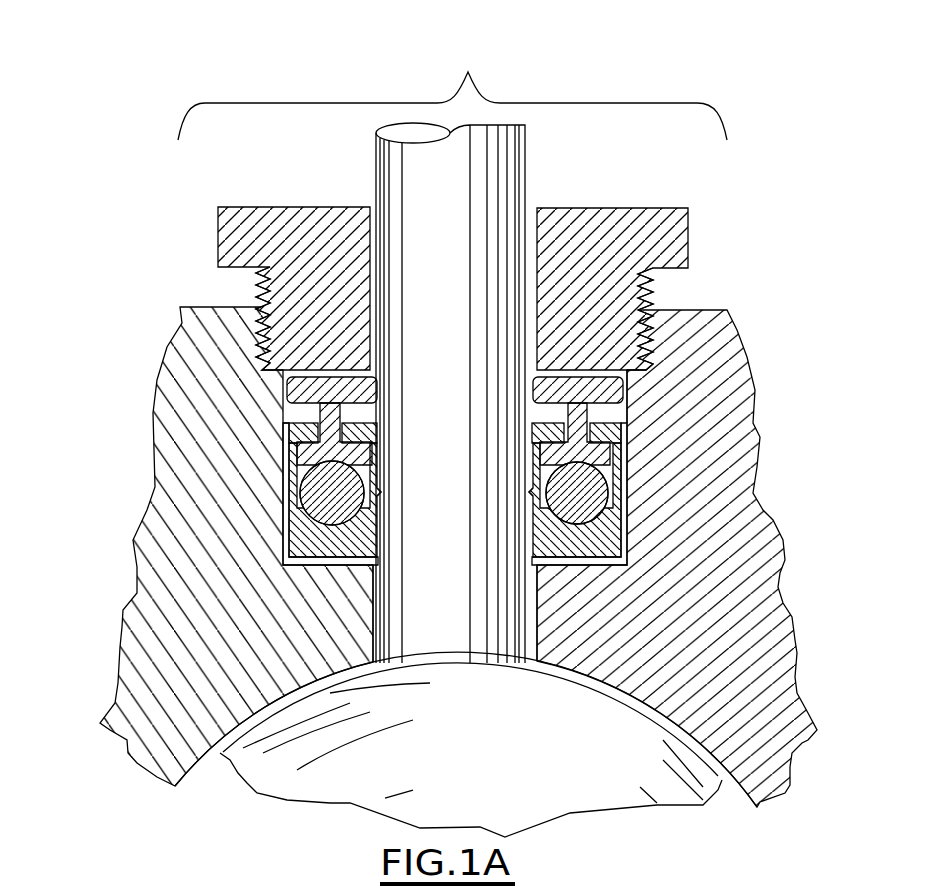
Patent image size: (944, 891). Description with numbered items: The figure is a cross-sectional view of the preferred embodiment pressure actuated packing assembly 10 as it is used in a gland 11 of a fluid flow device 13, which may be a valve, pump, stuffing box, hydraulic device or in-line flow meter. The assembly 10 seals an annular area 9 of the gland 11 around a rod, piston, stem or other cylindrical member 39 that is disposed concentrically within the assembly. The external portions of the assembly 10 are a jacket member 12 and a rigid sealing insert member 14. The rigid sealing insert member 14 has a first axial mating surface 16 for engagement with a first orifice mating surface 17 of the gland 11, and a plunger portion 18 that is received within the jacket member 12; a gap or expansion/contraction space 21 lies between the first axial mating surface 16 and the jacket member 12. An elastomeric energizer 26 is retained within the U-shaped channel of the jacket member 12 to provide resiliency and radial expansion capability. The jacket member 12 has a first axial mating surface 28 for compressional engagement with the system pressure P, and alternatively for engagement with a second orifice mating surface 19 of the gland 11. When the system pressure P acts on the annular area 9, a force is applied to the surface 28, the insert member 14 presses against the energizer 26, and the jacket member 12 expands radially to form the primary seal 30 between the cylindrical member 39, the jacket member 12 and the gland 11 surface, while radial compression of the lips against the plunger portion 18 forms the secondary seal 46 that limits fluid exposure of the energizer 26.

The annular area 9 is at (357, 564).
The pressure actuated packing assembly 10 is at (277, 460).
The gland 11 is at (452, 86).
The jacket member 12 is at (285, 533).
The fluid flow device 13 is at (725, 340).
The rigid sealing insert member 14 is at (313, 390).
The first axial mating surface 16 is at (297, 375).
The first orifice mating surface 17 is at (590, 250).
The plunger portion 18 is at (340, 413).
The second orifice mating surface 19 is at (378, 628).
The gap or expansion/contraction space 21 is at (612, 412).
The elastomeric energizer 26 is at (303, 503).
The first axial mating surface 28 is at (280, 570).
The primary seal 30 is at (383, 492).
The cylindrical member 39 is at (455, 509).
The secondary seal 46 is at (283, 423).
The system pressure P is at (214, 753).